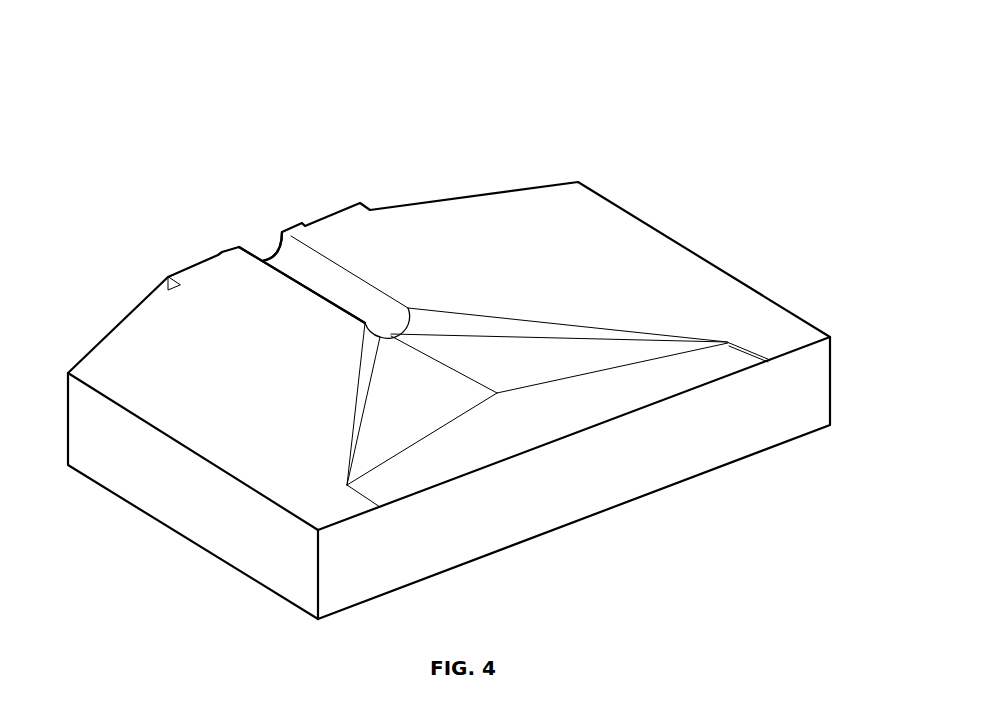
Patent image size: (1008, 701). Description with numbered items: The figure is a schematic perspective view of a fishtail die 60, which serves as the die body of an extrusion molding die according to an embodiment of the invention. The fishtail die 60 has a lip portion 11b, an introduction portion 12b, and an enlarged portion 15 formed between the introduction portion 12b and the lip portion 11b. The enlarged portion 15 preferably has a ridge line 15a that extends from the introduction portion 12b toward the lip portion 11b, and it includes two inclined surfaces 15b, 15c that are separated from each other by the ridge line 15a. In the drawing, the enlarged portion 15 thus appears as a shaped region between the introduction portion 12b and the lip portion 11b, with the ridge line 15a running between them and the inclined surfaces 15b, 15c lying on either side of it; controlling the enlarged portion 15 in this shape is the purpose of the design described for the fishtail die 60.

The fishtail die 60 is at (449, 332).
The lip portion 11b is at (567, 408).
The introduction portion 12b is at (310, 267).
The enlarged portion 15 is at (558, 276).
The ridge line 15a is at (475, 377).
The inclined surface 15b is at (403, 393).
The inclined surface 15c is at (582, 357).